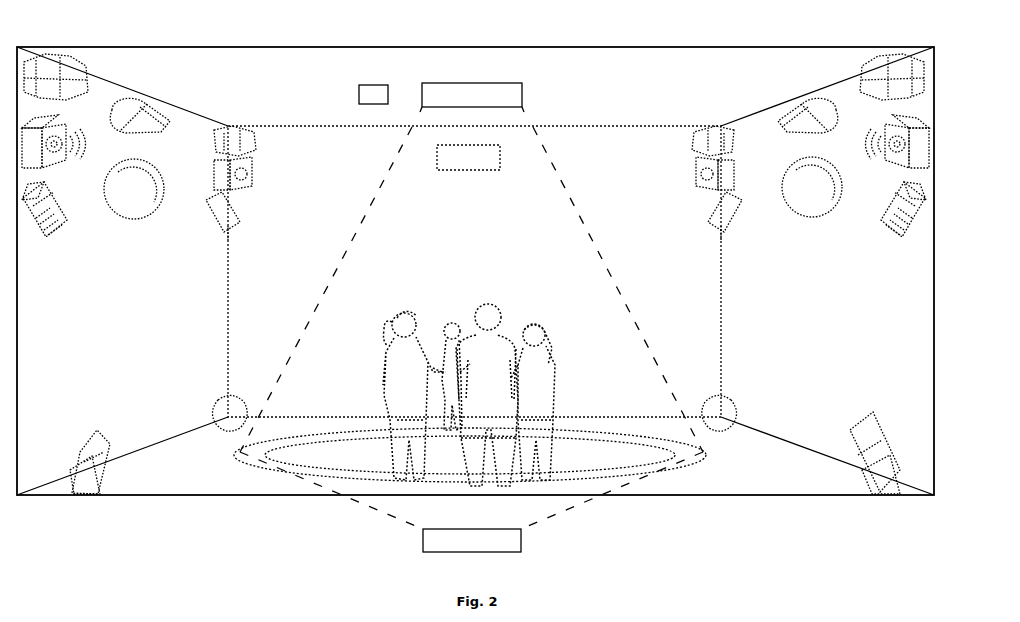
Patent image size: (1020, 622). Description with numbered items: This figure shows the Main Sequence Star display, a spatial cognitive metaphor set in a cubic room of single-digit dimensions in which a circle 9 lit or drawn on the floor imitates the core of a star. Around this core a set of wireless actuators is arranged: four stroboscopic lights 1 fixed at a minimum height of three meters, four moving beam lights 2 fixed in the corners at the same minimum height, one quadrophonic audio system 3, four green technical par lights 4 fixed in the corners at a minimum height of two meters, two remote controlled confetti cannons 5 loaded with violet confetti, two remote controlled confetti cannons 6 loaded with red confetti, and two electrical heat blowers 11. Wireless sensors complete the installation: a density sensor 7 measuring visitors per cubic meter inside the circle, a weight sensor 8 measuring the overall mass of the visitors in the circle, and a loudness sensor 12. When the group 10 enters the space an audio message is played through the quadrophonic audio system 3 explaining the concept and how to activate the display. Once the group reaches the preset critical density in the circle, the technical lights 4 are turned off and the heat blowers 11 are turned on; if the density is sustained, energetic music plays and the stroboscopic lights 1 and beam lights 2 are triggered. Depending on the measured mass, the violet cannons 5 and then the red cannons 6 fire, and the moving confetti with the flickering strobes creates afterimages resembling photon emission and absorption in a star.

The stroboscopic lights 1 is at (149, 101).
The moving beam lights 2 is at (71, 60).
The quadrophonic audio system 3 is at (891, 153).
The technical par 64 lights 4 is at (882, 219).
The violet confetti cannons 5 is at (857, 433).
The red confetti cannons 6 is at (114, 446).
The density sensor 7 is at (472, 86).
The weight sensor 8 is at (472, 554).
The circle 9 is at (470, 429).
The group 10 is at (439, 395).
The electrical heat blowers 11 is at (135, 202).
The loudness sensor 12 is at (373, 84).